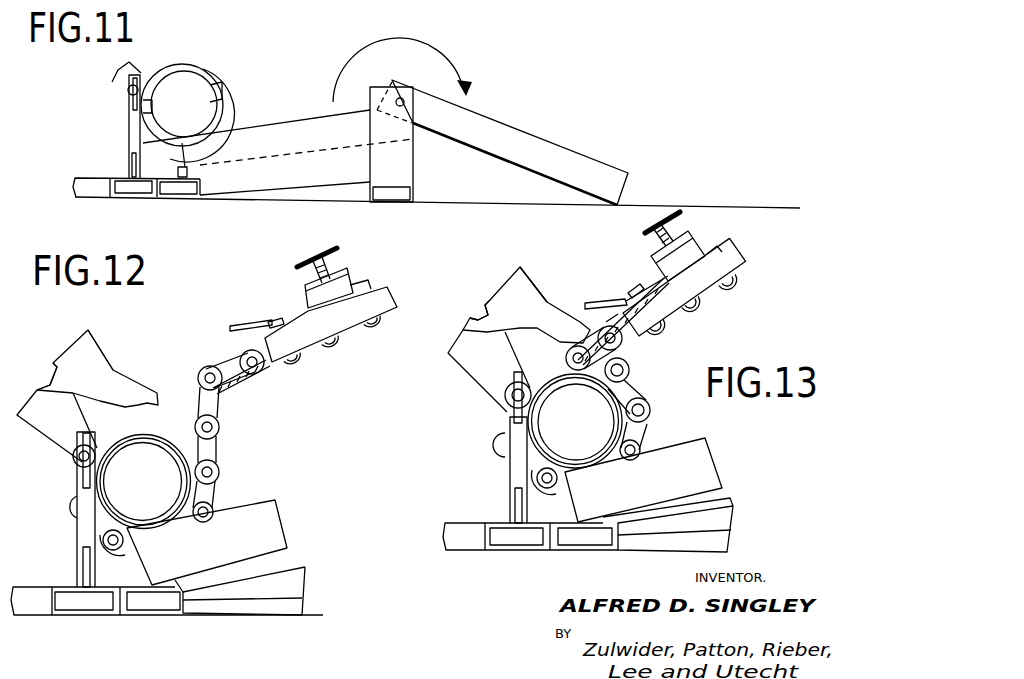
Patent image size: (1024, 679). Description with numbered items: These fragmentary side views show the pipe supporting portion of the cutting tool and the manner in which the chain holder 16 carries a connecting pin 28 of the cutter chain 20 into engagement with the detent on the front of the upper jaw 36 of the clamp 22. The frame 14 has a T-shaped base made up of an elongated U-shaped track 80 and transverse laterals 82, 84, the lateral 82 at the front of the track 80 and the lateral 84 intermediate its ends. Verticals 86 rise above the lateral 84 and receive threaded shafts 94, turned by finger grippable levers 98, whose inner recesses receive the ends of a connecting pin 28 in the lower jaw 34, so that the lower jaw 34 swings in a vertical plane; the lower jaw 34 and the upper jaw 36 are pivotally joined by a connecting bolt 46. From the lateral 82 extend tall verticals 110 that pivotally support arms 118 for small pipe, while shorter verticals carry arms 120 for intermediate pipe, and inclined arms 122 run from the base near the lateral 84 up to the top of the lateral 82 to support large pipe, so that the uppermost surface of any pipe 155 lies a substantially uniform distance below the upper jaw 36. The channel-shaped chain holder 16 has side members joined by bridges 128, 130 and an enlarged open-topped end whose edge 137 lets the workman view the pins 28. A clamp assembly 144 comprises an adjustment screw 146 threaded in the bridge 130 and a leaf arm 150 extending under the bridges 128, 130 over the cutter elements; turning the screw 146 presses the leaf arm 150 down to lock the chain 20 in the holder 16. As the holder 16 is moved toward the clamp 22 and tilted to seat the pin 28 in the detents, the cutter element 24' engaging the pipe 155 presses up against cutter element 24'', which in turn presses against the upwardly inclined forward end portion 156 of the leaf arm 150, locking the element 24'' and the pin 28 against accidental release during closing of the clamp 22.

In FIG. 11, the frame 14 is at (150, 203).
In FIG. 12, the frame 14 is at (152, 624).
In FIG. 13, the frame 14 is at (490, 509).
In FIG. 12, the chain holder 16 is at (362, 278).
In FIG. 13, the chain holder 16 is at (743, 239).
In FIG. 12, the cutter chain 20 is at (222, 448).
In FIG. 13, the cutter chain 20 is at (659, 383).
In FIG. 12, the clamp 22 is at (105, 339).
In FIG. 13, the clamp 22 is at (534, 268).
In FIG. 13, the cutter element 24' is at (627, 321).
In FIG. 13, the cutter element 24'' is at (616, 301).
In FIG. 12, the connecting pin 28 is at (210, 375).
In FIG. 13, the connecting pin 28 is at (566, 358).
In FIG. 11, the lower clamp jaw 34 is at (113, 80).
In FIG. 12, the lower clamp jaw 34 is at (40, 432).
In FIG. 13, the lower clamp jaw 34 is at (462, 358).
In FIG. 12, the upper clamp jaw 36 is at (107, 360).
In FIG. 13, the upper clamp jaw 36 is at (508, 280).
In FIG. 12, the connecting bolt 46 is at (50, 375).
In FIG. 13, the connecting bolt 46 is at (478, 308).
In FIG. 11, the track 80 is at (92, 187).
In FIG. 12, the track 80 is at (33, 613).
In FIG. 13, the track 80 is at (457, 542).
In FIG. 11, the lateral 82 is at (415, 193).
In FIG. 11, the lateral 84 is at (125, 186).
In FIG. 12, the lateral 84 is at (82, 612).
In FIG. 13, the lateral 84 is at (507, 547).
In FIG. 11, the verticals 86 is at (133, 123).
In FIG. 12, the verticals 86 is at (83, 535).
In FIG. 13, the verticals 86 is at (513, 466).
In FIG. 12, the threaded shaft 94 is at (80, 462).
In FIG. 13, the threaded shaft 94 is at (505, 393).
In FIG. 11, the finger grippable lever 98 is at (143, 97).
In FIG. 12, the finger grippable lever 98 is at (92, 432).
In FIG. 13, the finger grippable lever 98 is at (512, 415).
In FIG. 11, the tall vertical 110 is at (413, 157).
In FIG. 11, the arm 118 is at (505, 128).
In FIG. 12, the arm 118 is at (268, 517).
In FIG. 13, the arm 118 is at (700, 462).
In FIG. 11, the arm 120 is at (295, 128).
In FIG. 12, the arm 120 is at (288, 562).
In FIG. 13, the arm 120 is at (717, 500).
In FIG. 11, the inclined arm 122 is at (310, 180).
In FIG. 12, the inclined arm 122 is at (300, 583).
In FIG. 13, the inclined arm 122 is at (728, 527).
In FIG. 12, the bridge 128 is at (280, 320).
In FIG. 13, the bridge 128 is at (633, 286).
In FIG. 12, the bridge 130 is at (313, 292).
In FIG. 13, the bridge 130 is at (697, 242).
In FIG. 12, the edge 137 is at (217, 395).
In FIG. 13, the edge 137 is at (580, 372).
In FIG. 12, the clamp assembly 144 is at (293, 256).
In FIG. 13, the clamp assembly 144 is at (662, 222).
In FIG. 12, the adjustment screw 146 is at (327, 263).
In FIG. 13, the adjustment screw 146 is at (673, 228).
In FIG. 12, the leaf arm 150 is at (298, 317).
In FIG. 13, the leaf arm 150 is at (652, 285).
In FIG. 11, the pipe 155 is at (208, 80).
In FIG. 12, the pipe 155 is at (156, 441).
In FIG. 13, the pipe 155 is at (542, 438).
In FIG. 12, the forward end portion 156 is at (240, 328).
In FIG. 13, the forward end portion 156 is at (590, 303).